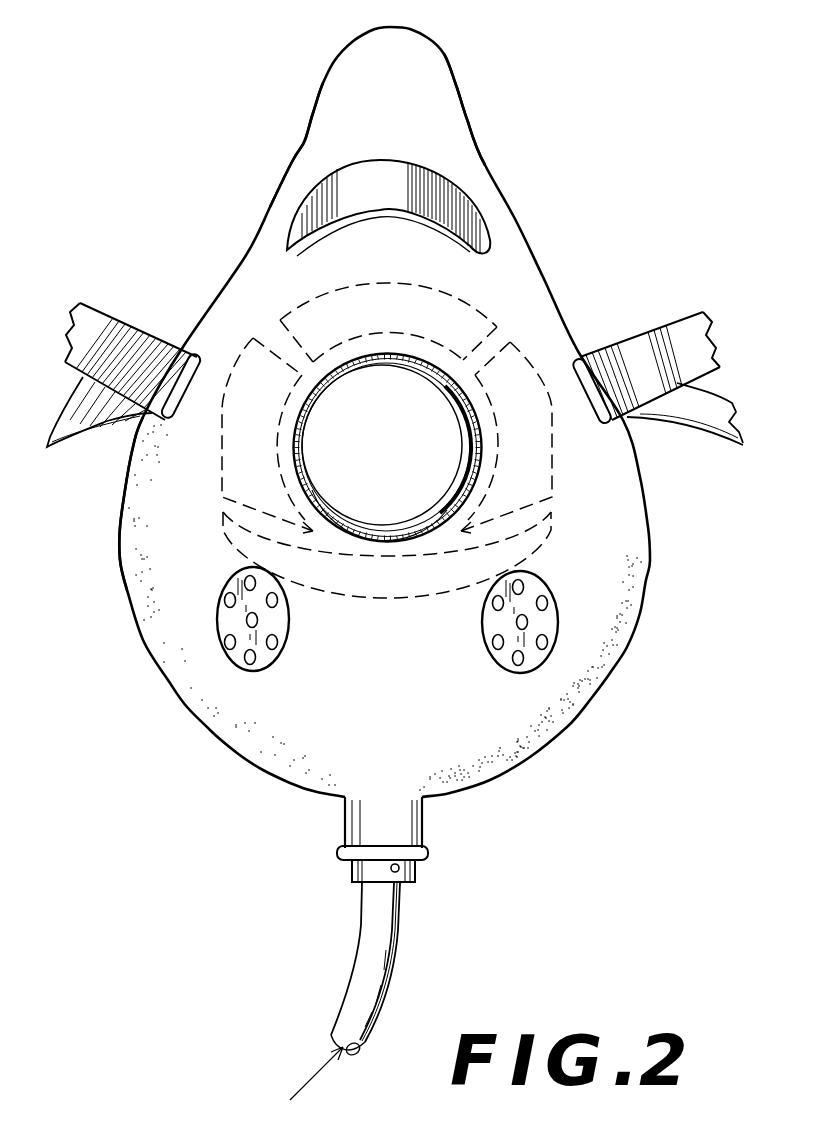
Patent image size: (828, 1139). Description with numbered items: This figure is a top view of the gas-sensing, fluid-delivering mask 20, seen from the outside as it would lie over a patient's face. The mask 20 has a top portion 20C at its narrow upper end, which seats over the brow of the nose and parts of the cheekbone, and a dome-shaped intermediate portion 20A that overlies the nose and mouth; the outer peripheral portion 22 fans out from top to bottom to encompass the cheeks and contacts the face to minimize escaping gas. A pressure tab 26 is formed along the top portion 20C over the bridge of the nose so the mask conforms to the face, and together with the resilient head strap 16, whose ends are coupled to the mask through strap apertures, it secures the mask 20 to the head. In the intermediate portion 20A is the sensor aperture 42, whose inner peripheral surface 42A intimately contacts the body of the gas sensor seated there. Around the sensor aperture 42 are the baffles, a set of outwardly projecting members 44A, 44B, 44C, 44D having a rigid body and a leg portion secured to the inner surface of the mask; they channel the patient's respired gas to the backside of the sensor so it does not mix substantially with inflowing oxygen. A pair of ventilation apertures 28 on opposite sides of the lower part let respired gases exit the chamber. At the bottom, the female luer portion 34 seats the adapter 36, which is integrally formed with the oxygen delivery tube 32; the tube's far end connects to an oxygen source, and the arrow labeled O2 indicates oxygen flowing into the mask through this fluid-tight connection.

The gas-sensing mask 20 is at (512, 218).
The dome-shaped intermediate portion 20A is at (120, 517).
The top portion 20C is at (308, 138).
The outer peripheral portion 22 is at (472, 133).
The pressure tab 26 is at (367, 190).
The head strap 16 is at (115, 322).
The sensor aperture 42 is at (399, 457).
The inner peripheral surface of the sensor aperture 42A is at (386, 453).
The baffle body 44A is at (373, 308).
The baffle leg portion 44B is at (260, 373).
The baffle member 44C is at (358, 583).
The baffle member 44D is at (552, 464).
The ventilation apertures 28 is at (278, 628).
The female luer portion 34 is at (408, 832).
The adapter 36 is at (415, 868).
The oxygen delivery tube 32 is at (398, 967).
The oxygen flow O2 is at (320, 1080).